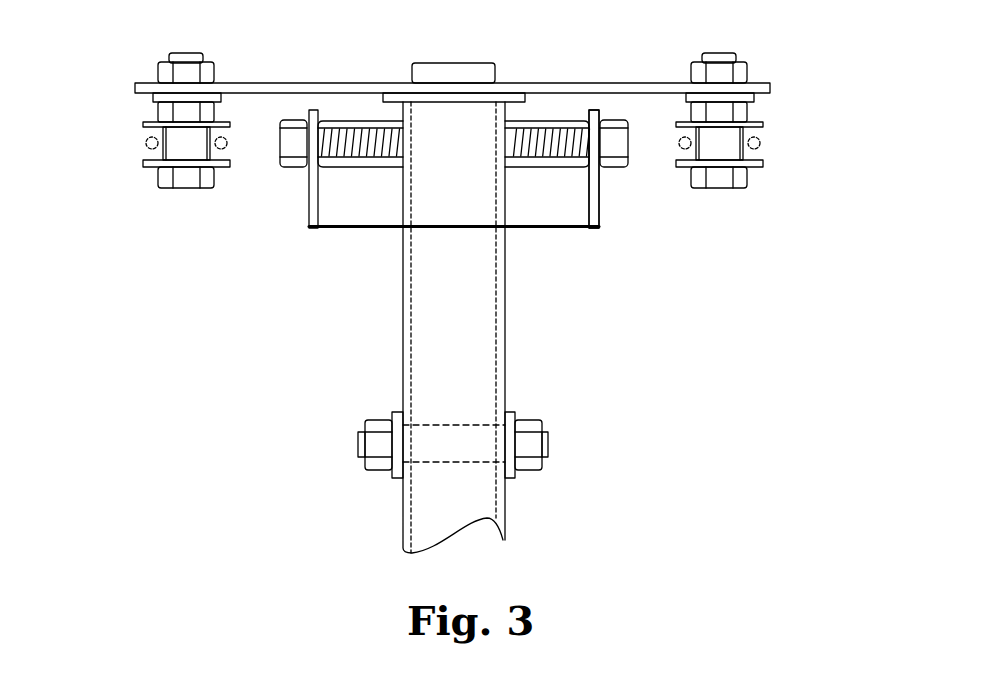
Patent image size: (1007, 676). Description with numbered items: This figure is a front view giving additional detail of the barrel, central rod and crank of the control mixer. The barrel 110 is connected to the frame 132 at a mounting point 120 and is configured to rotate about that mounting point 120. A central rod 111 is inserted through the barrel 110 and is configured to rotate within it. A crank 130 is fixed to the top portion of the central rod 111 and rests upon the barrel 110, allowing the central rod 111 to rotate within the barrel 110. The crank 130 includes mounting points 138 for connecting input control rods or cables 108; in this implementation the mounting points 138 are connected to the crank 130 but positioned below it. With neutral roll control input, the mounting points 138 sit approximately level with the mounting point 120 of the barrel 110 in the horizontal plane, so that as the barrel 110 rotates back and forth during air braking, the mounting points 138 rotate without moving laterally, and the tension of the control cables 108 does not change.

The crank 130 is at (593, 83).
The input control rods or cables 108 is at (149, 138).
The mounting points 138 is at (165, 153).
The mounting point 120 is at (293, 170).
The frame 132 is at (600, 222).
The barrel 110 is at (505, 357).
The central rod 111 is at (411, 373).